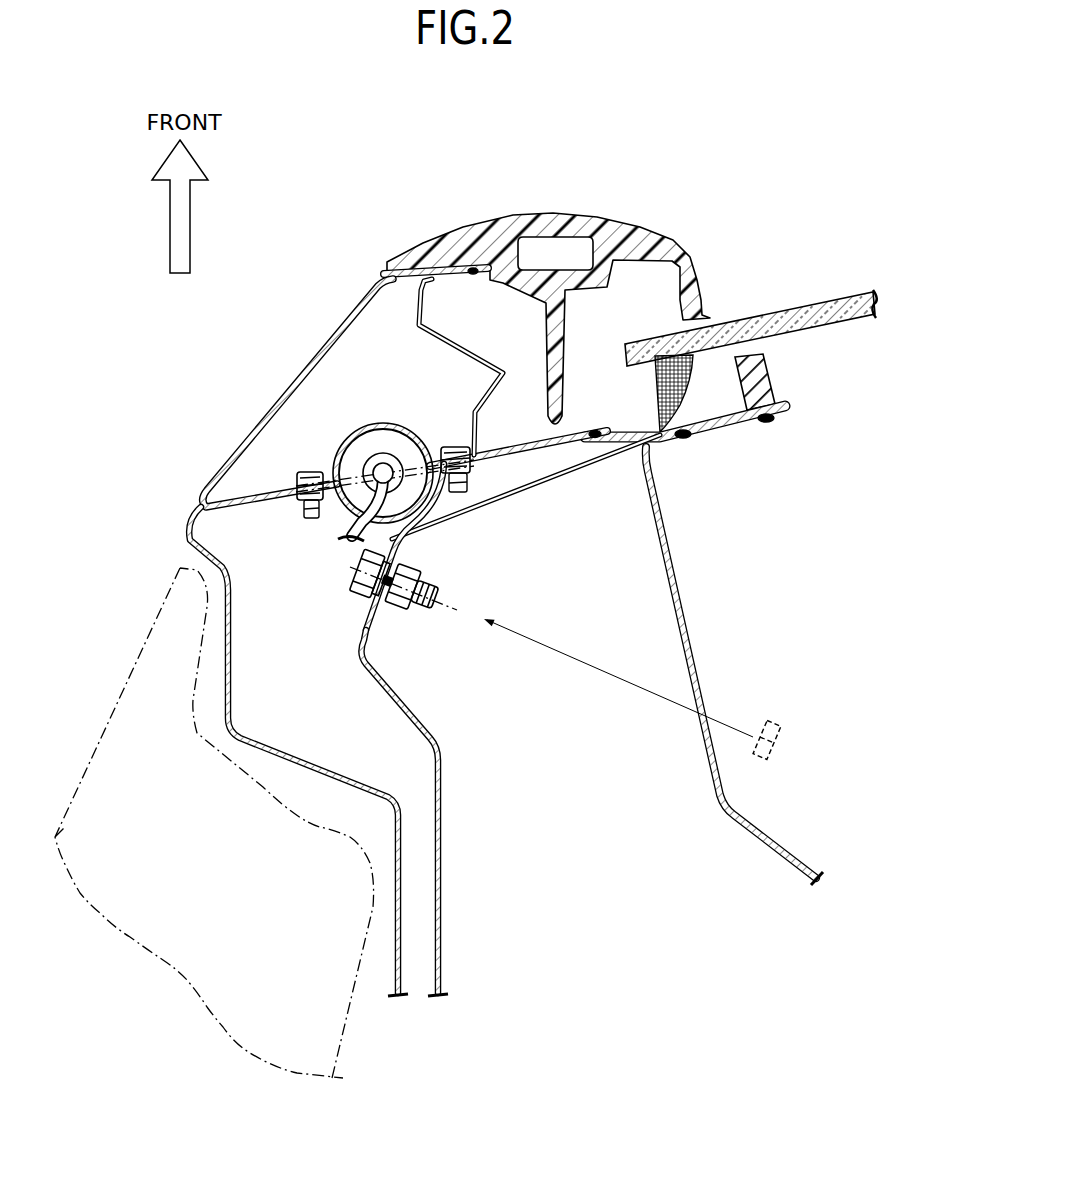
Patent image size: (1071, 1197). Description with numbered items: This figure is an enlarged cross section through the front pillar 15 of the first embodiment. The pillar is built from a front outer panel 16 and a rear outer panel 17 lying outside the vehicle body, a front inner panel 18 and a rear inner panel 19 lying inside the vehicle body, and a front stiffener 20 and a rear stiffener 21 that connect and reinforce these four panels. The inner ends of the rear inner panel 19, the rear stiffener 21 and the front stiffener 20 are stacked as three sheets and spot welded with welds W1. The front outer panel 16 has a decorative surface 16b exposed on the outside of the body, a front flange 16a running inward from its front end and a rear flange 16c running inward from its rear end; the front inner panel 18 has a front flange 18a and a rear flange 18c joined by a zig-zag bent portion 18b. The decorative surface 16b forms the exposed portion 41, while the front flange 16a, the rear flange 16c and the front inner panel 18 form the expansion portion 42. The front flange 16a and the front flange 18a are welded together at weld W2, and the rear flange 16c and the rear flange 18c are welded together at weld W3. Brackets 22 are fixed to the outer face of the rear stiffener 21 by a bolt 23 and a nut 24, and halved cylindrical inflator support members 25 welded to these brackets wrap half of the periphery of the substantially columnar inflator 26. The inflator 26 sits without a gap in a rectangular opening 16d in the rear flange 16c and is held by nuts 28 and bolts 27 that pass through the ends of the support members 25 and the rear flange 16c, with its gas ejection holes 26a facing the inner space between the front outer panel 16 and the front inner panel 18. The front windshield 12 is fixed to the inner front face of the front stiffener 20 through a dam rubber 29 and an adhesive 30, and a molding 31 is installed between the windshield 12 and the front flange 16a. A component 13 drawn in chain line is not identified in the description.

The front windshield 12 is at (807, 310).
The wheel 13 is at (113, 687).
The front pillar 15 is at (284, 334).
The front outer panel 16 is at (334, 333).
The front flange 16a is at (435, 274).
The decorative surface 16b is at (250, 416).
The rear flange 16c is at (268, 489).
The rectangular opening 16d is at (413, 427).
The rear outer panel 17 is at (303, 757).
The front inner panel 18 is at (478, 356).
The front flange 18a is at (441, 284).
The bent portion 18b is at (447, 348).
The rear flange 18c is at (517, 437).
The rear inner panel 19 is at (678, 584).
The front stiffener 20 is at (717, 414).
The rear stiffener 21 is at (442, 737).
The bracket 22 is at (432, 508).
The bolt 23 is at (355, 590).
The nut 24 is at (392, 614).
The inflator support member 25 is at (436, 500).
The inflator 26 is at (334, 447).
The gas ejection hole 26a is at (369, 424).
The bolt 27 is at (308, 471).
The nut 28 is at (307, 508).
The dam rubber 29 is at (773, 367).
The adhesive 30 is at (657, 393).
The molding 31 is at (605, 228).
The exposed portion 41 is at (271, 386).
The expansion portion 42 is at (507, 361).
The weld W1 is at (683, 438).
The weld W2 is at (473, 266).
The weld W3 is at (593, 430).